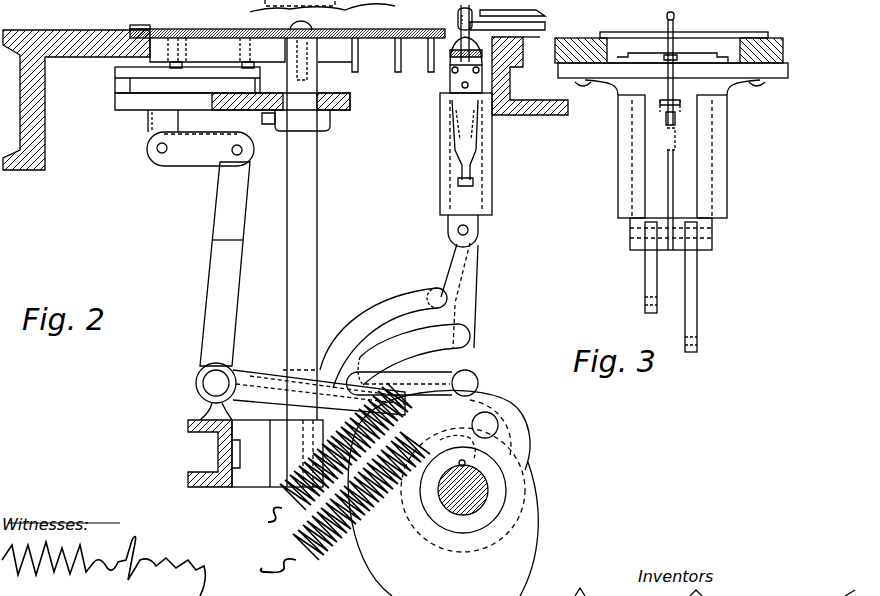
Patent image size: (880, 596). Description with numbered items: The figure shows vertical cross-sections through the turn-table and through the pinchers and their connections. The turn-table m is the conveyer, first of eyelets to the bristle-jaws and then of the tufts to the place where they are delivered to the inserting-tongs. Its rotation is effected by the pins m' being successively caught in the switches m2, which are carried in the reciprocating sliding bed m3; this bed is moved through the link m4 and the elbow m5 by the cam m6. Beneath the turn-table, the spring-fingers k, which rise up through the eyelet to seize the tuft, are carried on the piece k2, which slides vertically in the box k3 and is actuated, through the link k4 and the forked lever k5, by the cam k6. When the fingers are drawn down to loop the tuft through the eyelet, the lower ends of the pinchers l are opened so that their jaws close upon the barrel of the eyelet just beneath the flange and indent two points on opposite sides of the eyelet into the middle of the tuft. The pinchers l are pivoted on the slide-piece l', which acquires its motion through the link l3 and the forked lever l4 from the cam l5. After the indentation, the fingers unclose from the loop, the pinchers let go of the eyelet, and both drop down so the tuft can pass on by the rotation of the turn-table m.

In FIG. 2, the turn-table m is at (287, 26).
In FIG. 2, the pins m' is at (294, 59).
In FIG. 2, the switches m2 is at (187, 80).
In FIG. 2, the reciprocating sliding bed m3 is at (232, 105).
In FIG. 2, the link m4 is at (200, 149).
In FIG. 2, the elbow m5 is at (347, 300).
In FIG. 2, the cam m6 is at (443, 494).
In FIG. 2, the spring-fingers k is at (464, 35).
In FIG. 2, the slide piece k2 is at (465, 140).
In FIG. 3, the slide piece k2 is at (665, 138).
In FIG. 2, the box k3 is at (492, 168).
In FIG. 2, the link k4 is at (449, 273).
In FIG. 3, the link k4 is at (655, 270).
In FIG. 2, the forked lever k5 is at (399, 341).
In FIG. 2, the cam k6 is at (475, 430).
In FIG. 2, the pinchers l is at (466, 79).
In FIG. 2, the slide-piece l' is at (463, 232).
In FIG. 3, the slide-piece l' is at (674, 131).
In FIG. 2, the link l3 is at (465, 296).
In FIG. 3, the link l3 is at (691, 287).
In FIG. 2, the forked lever l4 is at (414, 376).
In FIG. 2, the cam l5 is at (487, 445).